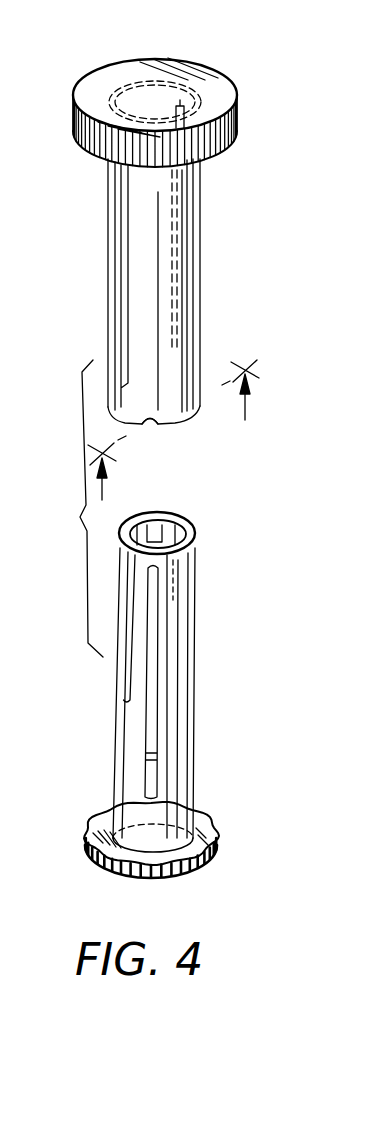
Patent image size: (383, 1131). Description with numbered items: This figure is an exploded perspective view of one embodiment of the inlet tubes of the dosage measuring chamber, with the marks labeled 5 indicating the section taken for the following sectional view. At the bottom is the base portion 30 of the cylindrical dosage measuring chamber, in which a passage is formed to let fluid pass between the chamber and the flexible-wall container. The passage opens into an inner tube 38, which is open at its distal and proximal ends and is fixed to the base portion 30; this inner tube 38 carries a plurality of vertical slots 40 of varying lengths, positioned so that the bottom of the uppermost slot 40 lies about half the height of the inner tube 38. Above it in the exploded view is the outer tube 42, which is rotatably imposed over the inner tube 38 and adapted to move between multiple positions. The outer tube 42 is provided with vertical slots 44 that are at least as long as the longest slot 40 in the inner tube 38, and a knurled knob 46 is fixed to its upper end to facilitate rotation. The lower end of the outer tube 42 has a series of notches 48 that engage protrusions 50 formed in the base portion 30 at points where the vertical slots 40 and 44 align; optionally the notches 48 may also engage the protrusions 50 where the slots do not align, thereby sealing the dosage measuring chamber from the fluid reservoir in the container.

The base portion 30 is at (172, 688).
The inner tube 38 is at (183, 672).
The vertical slots 40 is at (184, 530).
The outer tube 42 is at (151, 323).
The vertical slots 44 is at (123, 233).
The knurled knob 46 is at (218, 72).
The notches 48 is at (188, 423).
The protrusions 50 is at (210, 853).
The section line 5- 5 is at (171, 508).